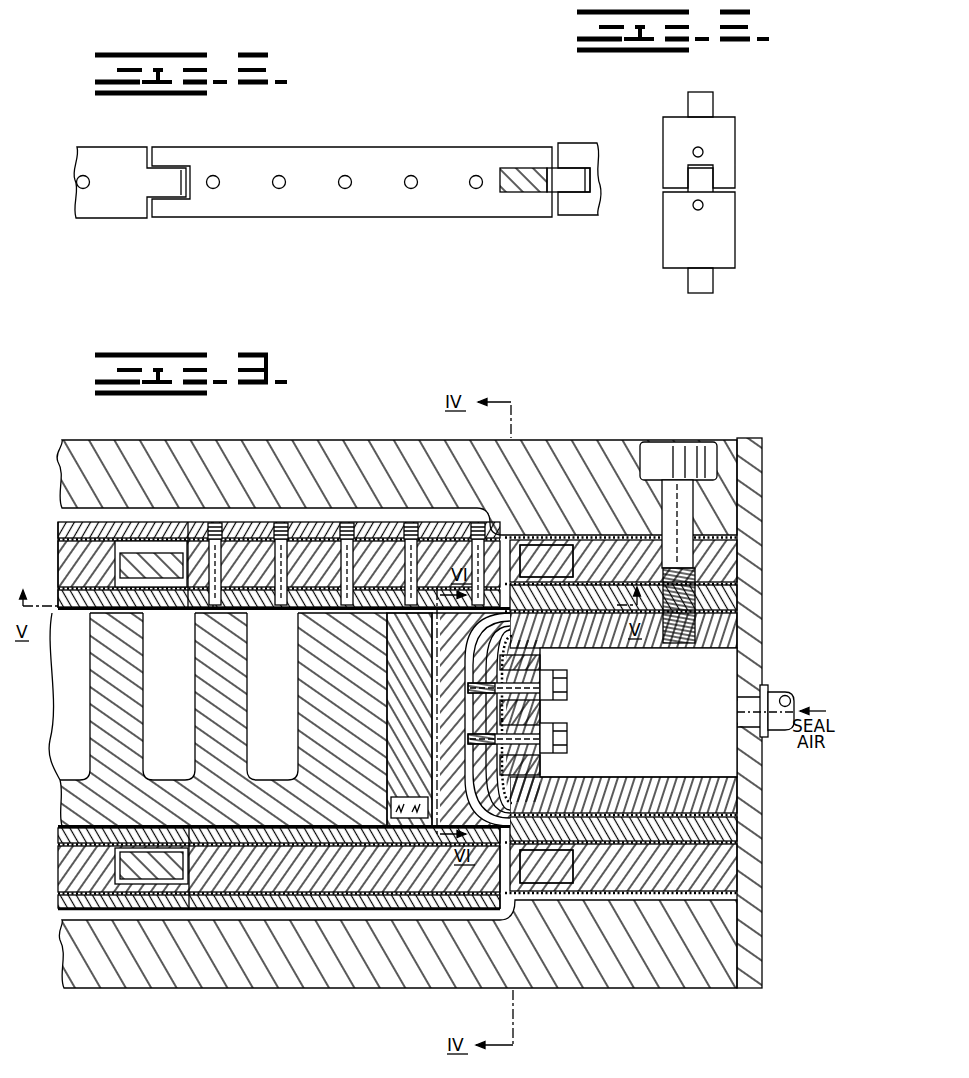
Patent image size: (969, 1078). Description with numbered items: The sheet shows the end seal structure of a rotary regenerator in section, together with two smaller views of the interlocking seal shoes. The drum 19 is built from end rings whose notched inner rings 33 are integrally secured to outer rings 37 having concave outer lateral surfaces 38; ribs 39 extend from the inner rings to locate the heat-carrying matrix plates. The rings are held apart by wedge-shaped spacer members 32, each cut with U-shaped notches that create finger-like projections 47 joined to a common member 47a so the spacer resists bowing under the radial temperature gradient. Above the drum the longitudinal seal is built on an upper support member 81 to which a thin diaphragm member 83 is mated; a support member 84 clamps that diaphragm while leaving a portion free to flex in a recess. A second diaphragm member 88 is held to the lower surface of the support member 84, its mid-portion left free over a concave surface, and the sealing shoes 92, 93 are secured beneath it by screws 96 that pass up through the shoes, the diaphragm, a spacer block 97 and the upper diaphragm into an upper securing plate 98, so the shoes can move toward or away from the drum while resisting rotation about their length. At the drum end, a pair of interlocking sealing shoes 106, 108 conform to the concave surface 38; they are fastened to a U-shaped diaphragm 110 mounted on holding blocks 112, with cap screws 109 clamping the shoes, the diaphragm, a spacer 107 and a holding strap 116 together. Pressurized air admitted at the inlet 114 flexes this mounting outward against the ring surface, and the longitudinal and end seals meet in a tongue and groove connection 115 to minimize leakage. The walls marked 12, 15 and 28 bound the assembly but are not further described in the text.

In FIG. 3, the lower housing wall 12 is at (250, 985).
In FIG. 5, the sealing strip 15 is at (566, 163).
In FIG. 3, the drum 19 is at (90, 752).
In FIG. 3, the end plate 28 is at (758, 650).
In FIG. 3, the spacer member 32 is at (118, 808).
In FIG. 3, the inner ring 33 is at (421, 648).
In FIG. 3, the outer ring 37 is at (440, 762).
In FIG. 3, the concave outer lateral surface 38 is at (471, 719).
In FIG. 3, the rib 39 is at (383, 702).
In FIG. 3, the finger-like projections 47 is at (196, 690).
In FIG. 3, the common member 47a is at (242, 791).
In FIG. 3, the upper support member 81 is at (243, 445).
In FIG. 3, the diaphragm member 83 is at (110, 537).
In FIG. 3, the support member 84 is at (147, 884).
In FIG. 3, the second diaphragm member 88 is at (190, 609).
In FIG. 5, the sealing shoe 92 is at (260, 208).
In FIG. 3, the sealing shoe 92 is at (258, 610).
In FIG. 5, the sealing shoe 93 is at (125, 208).
In FIG. 3, the sealing shoe 93 is at (85, 606).
In FIG. 5, the screws 96 is at (275, 177).
In FIG. 3, the screws 96 is at (277, 562).
In FIG. 3, the spacer block 97 is at (278, 609).
In FIG. 3, the upper securing plate 98 is at (209, 528).
In FIG. 5, the sealing shoe 106 is at (532, 193).
In FIG. 6, the sealing shoe 106 is at (728, 173).
In FIG. 3, the sealing shoe 106 is at (512, 631).
In FIG. 3, the spacer 107 is at (536, 758).
In FIG. 6, the sealing shoe 108 is at (728, 252).
In FIG. 3, the sealing shoe 108 is at (518, 786).
In FIG. 6, the cap screws 109 is at (697, 138).
In FIG. 3, the cap screws 109 is at (560, 685).
In FIG. 3, the U shaped diaphragm 110 is at (626, 648).
In FIG. 3, the holding blocks 112 is at (650, 644).
In FIG. 3, the inlet 114 is at (742, 720).
In FIG. 3, the tongue and groove connection 115 is at (571, 579).
In FIG. 3, the holding strap 116 is at (540, 714).